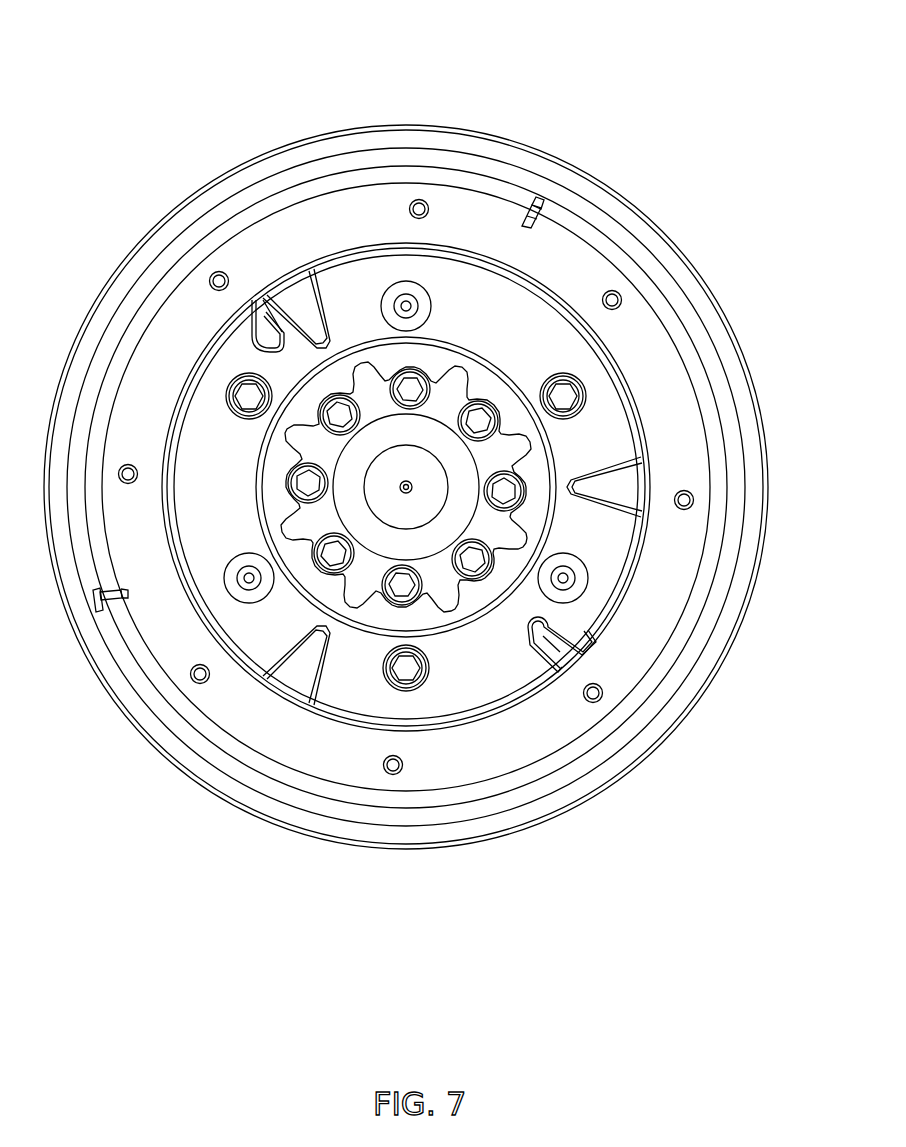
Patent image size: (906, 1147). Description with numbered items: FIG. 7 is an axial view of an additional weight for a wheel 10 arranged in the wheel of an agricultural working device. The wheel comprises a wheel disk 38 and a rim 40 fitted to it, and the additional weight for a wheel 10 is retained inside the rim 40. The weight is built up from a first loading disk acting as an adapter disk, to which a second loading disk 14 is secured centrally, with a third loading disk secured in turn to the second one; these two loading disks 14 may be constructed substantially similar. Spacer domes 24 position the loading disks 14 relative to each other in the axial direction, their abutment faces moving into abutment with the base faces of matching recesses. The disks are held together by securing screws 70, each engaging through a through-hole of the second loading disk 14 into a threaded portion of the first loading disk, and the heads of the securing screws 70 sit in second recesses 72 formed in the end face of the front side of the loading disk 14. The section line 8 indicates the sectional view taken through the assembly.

The section line 8- 8 is at (405, 88).
The additional weight for a wheel 10 is at (406, 463).
The second loading disk 14 is at (270, 340).
The spacer domes 24 is at (238, 590).
The wheel disk 38 is at (488, 224).
The rim 40 is at (589, 179).
The securing screw 70 is at (572, 382).
The second recesses 72 is at (487, 455).